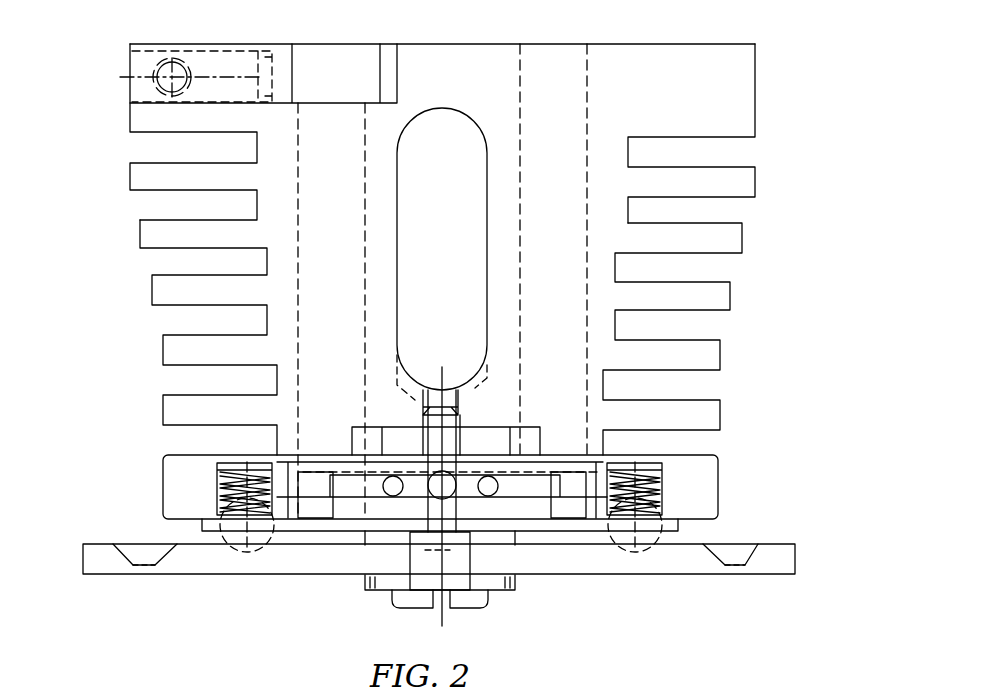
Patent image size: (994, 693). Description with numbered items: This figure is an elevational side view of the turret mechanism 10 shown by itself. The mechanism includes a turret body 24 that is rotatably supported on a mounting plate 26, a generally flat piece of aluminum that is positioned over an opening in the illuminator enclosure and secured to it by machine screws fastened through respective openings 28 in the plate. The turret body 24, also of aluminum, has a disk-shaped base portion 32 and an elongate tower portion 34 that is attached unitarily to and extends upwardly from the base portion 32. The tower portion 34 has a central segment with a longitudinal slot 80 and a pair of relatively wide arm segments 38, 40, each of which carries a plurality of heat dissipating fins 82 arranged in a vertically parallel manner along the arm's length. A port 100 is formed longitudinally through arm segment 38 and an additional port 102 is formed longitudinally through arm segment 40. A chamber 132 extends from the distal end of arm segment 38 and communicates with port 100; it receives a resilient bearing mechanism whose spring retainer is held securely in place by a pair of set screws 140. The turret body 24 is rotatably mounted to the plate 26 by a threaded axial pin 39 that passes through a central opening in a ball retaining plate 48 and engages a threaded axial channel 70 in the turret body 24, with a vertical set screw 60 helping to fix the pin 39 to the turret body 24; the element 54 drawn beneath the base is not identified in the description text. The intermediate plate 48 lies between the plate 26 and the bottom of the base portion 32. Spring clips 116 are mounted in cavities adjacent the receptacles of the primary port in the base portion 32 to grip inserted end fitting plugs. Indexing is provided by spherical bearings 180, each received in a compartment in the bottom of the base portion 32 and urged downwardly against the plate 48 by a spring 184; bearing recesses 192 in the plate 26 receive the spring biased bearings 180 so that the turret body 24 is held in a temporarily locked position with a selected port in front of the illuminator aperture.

The turret mechanism 10 is at (778, 163).
The turret body 24 is at (130, 113).
The mounting plate 26 is at (83, 563).
The openings 28 is at (120, 544).
The base portion 32 is at (718, 482).
The tower portion 34 is at (755, 88).
The arm segment 38 is at (130, 182).
The threaded axial pin 39 is at (482, 605).
The arm segment 40 is at (703, 46).
The ball retaining plate 48 is at (718, 522).
The bolt body 54 is at (545, 525).
The vertical set screw 60 is at (463, 392).
The threaded axial channel 70 is at (400, 352).
The longitudinal slot 80 is at (463, 205).
The heat dissipating fins 82 is at (150, 292).
The port 100 is at (400, 108).
The additional port 102 is at (587, 103).
The spring clips 116 is at (345, 520).
The chamber 132 is at (218, 44).
The set screws 140 is at (155, 72).
The spherical bearings 180 is at (213, 547).
The spring 184 is at (228, 470).
The bearing recesses 192 is at (247, 550).